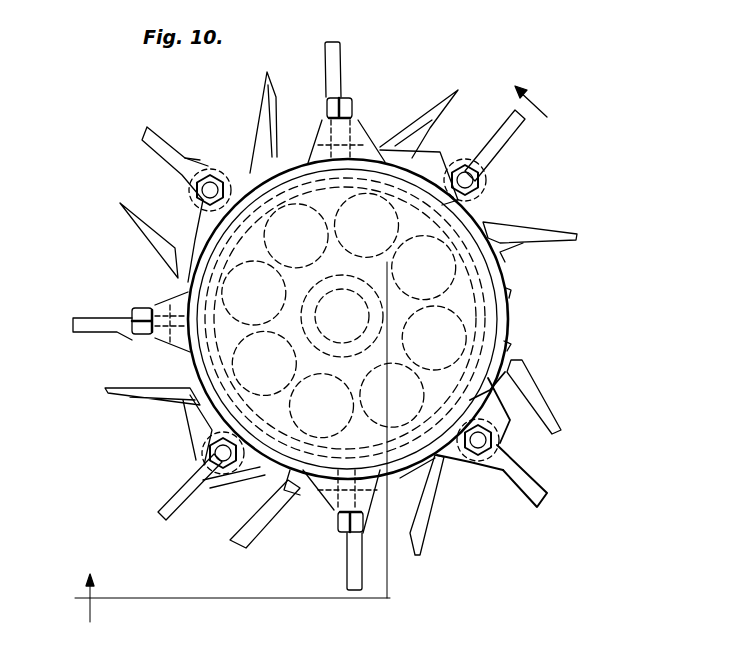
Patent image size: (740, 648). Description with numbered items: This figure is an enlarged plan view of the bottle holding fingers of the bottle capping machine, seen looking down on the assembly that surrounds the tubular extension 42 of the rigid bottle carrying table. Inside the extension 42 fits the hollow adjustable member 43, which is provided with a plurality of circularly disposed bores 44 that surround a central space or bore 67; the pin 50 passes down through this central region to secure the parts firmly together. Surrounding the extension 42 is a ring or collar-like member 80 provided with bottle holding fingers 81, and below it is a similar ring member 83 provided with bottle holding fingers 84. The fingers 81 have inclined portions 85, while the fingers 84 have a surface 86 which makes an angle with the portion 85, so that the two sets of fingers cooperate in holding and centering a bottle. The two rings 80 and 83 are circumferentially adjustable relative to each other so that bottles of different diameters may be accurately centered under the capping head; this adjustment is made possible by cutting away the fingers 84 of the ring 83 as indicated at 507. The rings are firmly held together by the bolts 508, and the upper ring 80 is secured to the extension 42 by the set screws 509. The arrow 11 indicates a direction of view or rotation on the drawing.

The direction arrow 11 is at (543, 92).
The tubular extension 42 is at (400, 250).
The hollow adjustable member 43 is at (507, 258).
The circularly disposed bores 44 is at (312, 215).
The pin 50 is at (345, 295).
The central bore 67 is at (350, 310).
The ring member 80 is at (205, 237).
The bottle holding fingers 81 is at (505, 130).
The ring member 83 is at (519, 323).
The bottle holding fingers 84 is at (145, 222).
The inclined portions 85 is at (336, 512).
The surface 86 is at (290, 492).
The cut-away portion 507 is at (508, 348).
The bolts 508 is at (211, 188).
The set screws 509 is at (352, 104).